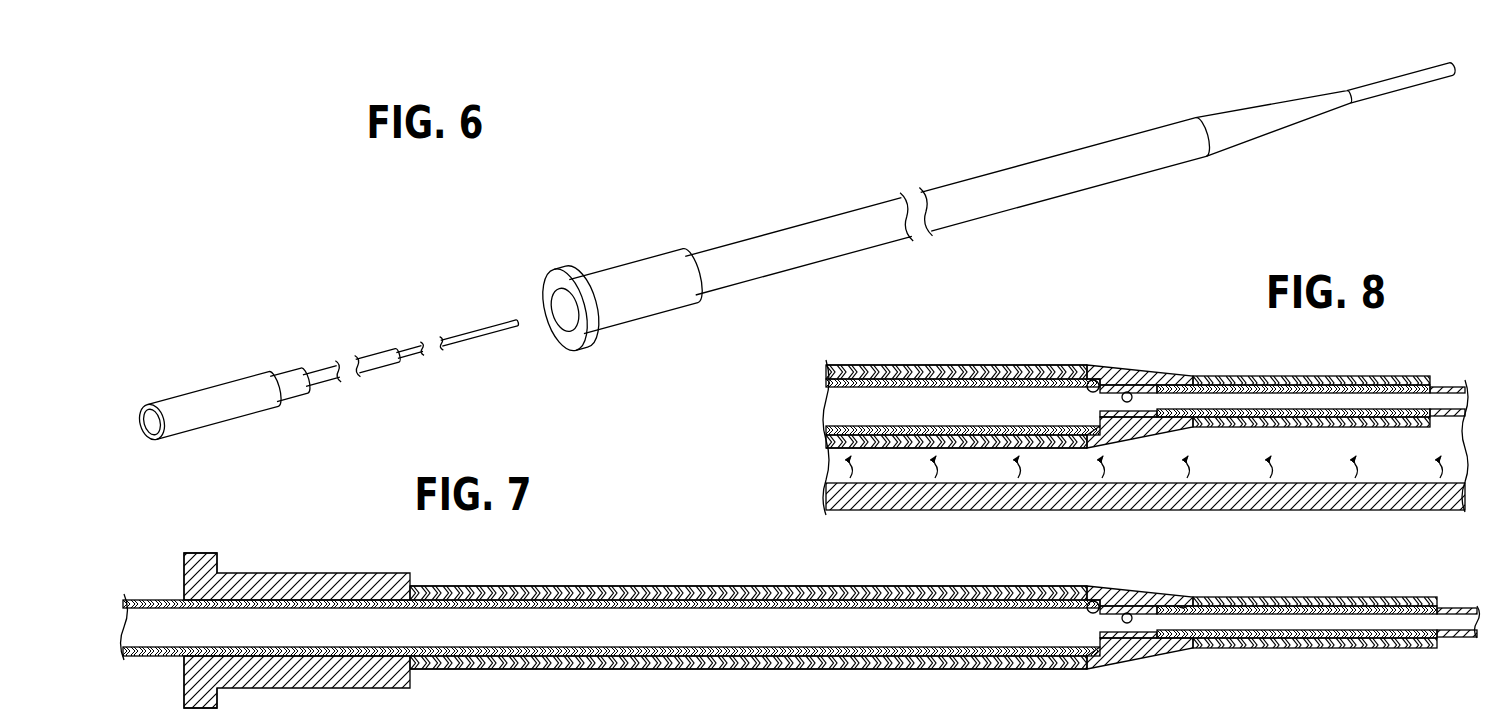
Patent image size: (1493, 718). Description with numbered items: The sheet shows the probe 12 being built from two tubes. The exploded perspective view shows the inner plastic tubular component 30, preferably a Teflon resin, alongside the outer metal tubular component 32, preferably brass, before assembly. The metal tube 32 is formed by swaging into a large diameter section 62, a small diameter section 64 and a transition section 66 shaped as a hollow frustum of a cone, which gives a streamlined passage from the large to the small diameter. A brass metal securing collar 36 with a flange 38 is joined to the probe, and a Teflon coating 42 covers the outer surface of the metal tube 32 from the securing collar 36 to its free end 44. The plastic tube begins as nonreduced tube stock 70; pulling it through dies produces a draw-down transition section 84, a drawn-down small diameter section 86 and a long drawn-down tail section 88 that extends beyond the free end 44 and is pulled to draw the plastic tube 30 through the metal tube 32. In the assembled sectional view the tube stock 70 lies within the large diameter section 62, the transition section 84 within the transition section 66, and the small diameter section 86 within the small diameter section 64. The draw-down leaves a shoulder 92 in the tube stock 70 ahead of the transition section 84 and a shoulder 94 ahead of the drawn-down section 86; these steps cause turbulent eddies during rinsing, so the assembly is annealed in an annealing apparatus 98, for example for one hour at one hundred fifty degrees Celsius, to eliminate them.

In FIG. 6, the probe 12 is at (907, 233).
In FIG. 7, the probe 12 is at (800, 600).
In FIG. 8, the probe 12 is at (1145, 367).
In FIG. 6, the inner plastic tubular component 30 is at (328, 343).
In FIG. 8, the inner plastic tubular component 30 is at (1145, 375).
In FIG. 6, the outer metal tubular component 32 is at (1070, 190).
In FIG. 8, the outer metal tubular component 32 is at (1128, 378).
In FIG. 6, the metal securing collar 36 is at (625, 315).
In FIG. 7, the metal securing collar 36 is at (303, 570).
In FIG. 6, the flange 38 is at (565, 343).
In FIG. 7, the flange 38 is at (192, 553).
In FIG. 7, the Teflon coating 42 is at (668, 583).
In FIG. 8, the Teflon coating 42 is at (1080, 362).
In FIG. 7, the free end 44 is at (1442, 604).
In FIG. 8, the free end 44 is at (1447, 401).
In FIG. 6, the large diameter section 62 is at (798, 257).
In FIG. 7, the large diameter section 62 is at (748, 598).
In FIG. 8, the large diameter section 62 is at (968, 378).
In FIG. 6, the small diameter section 64 is at (1395, 83).
In FIG. 7, the small diameter section 64 is at (1287, 597).
In FIG. 8, the small diameter section 64 is at (1360, 380).
In FIG. 6, the transition section 66 is at (1247, 128).
In FIG. 7, the transition section 66 is at (1123, 580).
In FIG. 8, the transition section 66 is at (1118, 368).
In FIG. 6, the tube stock 70 is at (170, 400).
In FIG. 7, the tube stock 70 is at (722, 603).
In FIG. 8, the tube stock 70 is at (963, 407).
In FIG. 6, the draw-down transition section 84 is at (288, 380).
In FIG. 7, the draw-down transition section 84 is at (1148, 600).
In FIG. 8, the draw-down transition section 84 is at (1165, 372).
In FIG. 6, the drawn-down small diameter section 86 is at (367, 362).
In FIG. 7, the drawn-down small diameter section 86 is at (1377, 612).
In FIG. 8, the drawn-down small diameter section 86 is at (1408, 395).
In FIG. 6, the drawn-down tail section 88 is at (475, 333).
In FIG. 7, the shoulder 92 is at (1083, 592).
In FIG. 7, the shoulder 94 is at (1183, 603).
In FIG. 8, the annealing apparatus 98 is at (959, 516).